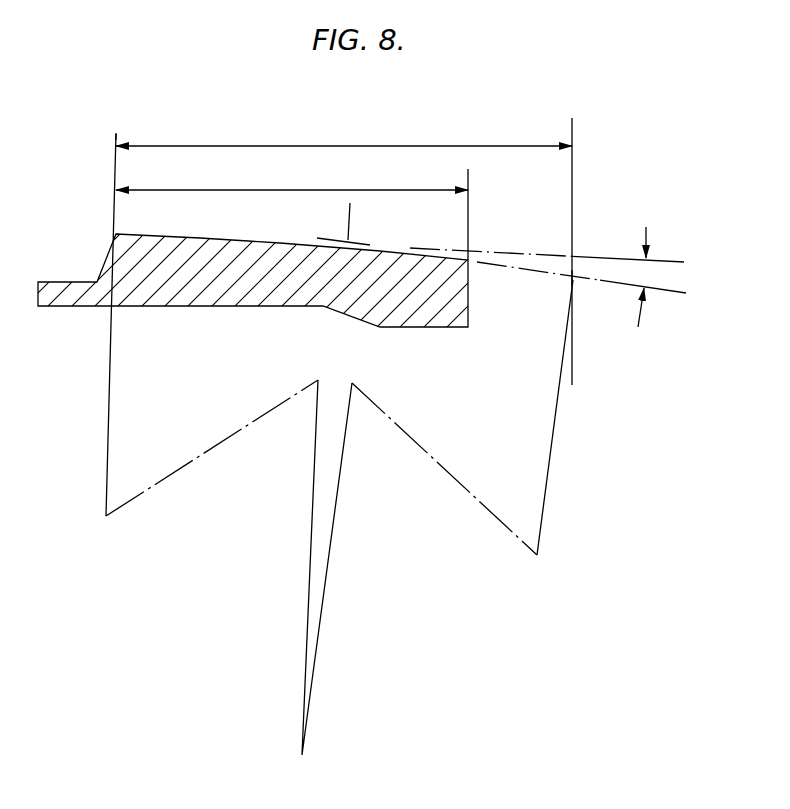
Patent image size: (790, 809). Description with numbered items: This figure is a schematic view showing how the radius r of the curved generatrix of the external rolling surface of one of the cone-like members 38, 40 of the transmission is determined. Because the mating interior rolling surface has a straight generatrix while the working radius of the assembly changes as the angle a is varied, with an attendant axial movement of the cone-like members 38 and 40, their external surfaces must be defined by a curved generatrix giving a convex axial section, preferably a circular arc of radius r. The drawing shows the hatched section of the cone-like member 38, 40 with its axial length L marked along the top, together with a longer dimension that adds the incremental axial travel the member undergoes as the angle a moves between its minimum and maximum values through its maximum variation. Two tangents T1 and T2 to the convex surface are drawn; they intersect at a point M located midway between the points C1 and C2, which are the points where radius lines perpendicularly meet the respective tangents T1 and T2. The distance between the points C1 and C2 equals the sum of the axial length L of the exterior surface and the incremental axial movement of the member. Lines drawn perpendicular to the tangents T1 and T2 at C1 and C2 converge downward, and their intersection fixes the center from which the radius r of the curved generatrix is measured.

The cone-like member 38 is at (298, 270).
The cone-like member 40 is at (135, 262).
The axial length L is at (344, 157).
The point of tangent intersection M is at (348, 240).
The point of perpendicular intersection C1 is at (116, 233).
The point of perpendicular intersection C2 is at (572, 278).
The tangent T1 is at (606, 257).
The tangent T2 is at (602, 282).
The angle a is at (655, 277).
The radius of curved generatrix r is at (552, 451).